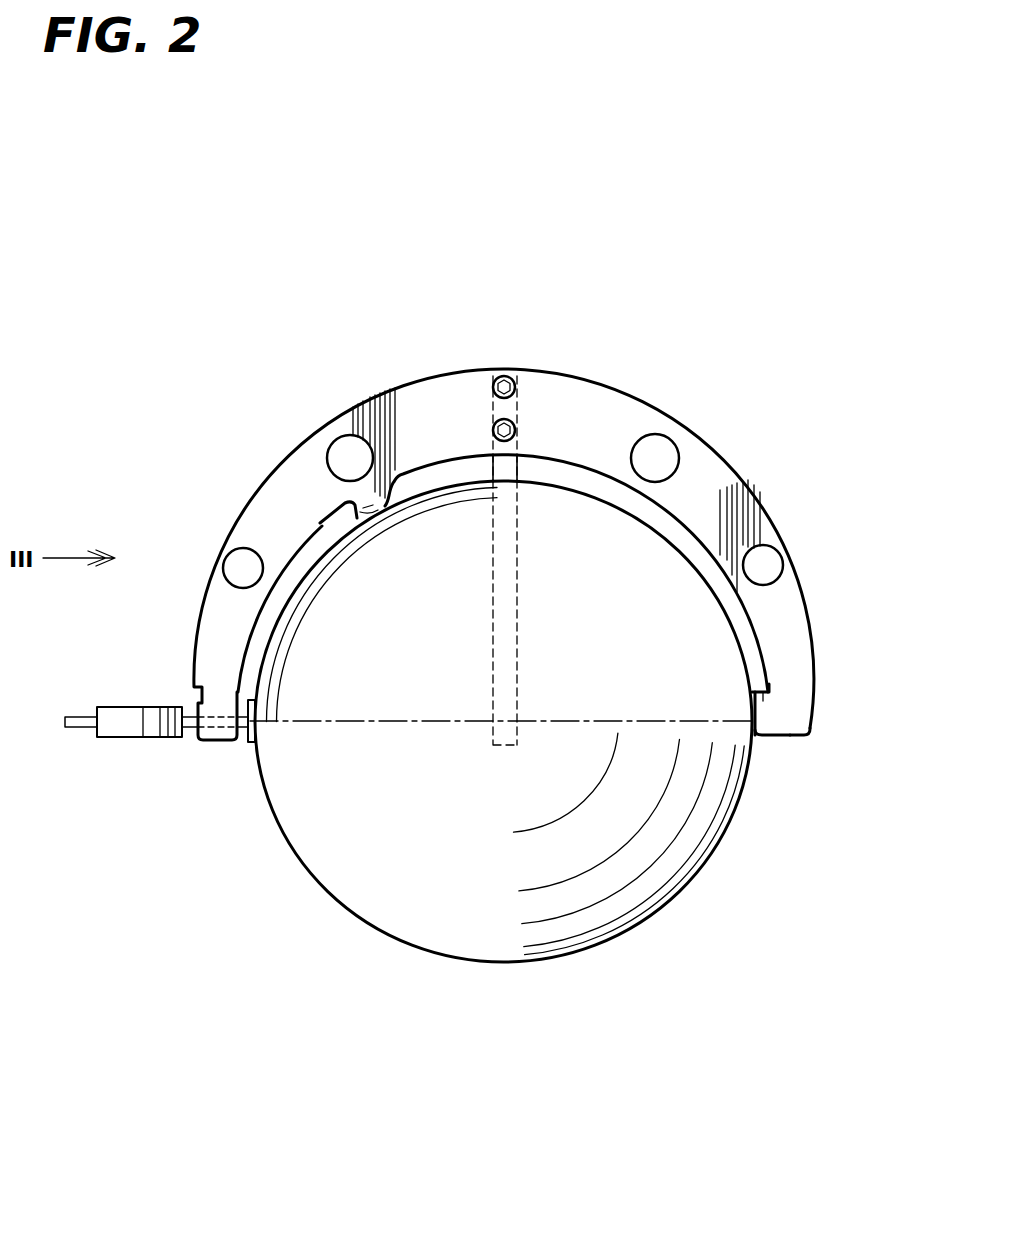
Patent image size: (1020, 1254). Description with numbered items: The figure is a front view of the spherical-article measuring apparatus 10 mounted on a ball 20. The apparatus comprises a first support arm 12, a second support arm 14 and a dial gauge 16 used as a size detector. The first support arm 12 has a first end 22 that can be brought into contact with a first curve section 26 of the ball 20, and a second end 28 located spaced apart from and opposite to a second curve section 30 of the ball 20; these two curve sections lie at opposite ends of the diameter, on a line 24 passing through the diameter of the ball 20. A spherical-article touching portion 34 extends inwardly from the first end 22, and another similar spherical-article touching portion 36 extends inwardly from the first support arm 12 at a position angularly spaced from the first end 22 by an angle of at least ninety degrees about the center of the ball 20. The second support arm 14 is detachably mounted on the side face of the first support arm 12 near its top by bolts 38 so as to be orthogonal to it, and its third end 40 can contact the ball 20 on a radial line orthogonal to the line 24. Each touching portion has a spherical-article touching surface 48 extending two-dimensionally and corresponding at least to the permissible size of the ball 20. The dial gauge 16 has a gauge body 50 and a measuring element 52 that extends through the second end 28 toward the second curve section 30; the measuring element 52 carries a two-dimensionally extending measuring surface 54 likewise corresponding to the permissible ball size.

The spherical-article measuring apparatus 10 is at (644, 296).
The first support arm 12 is at (366, 392).
The second support arm 14 is at (517, 468).
The dial gauge 16 is at (123, 707).
The ball 20 is at (355, 925).
The first end 22 is at (800, 736).
The line 24 is at (403, 720).
The first curve section 26 is at (771, 740).
The second end 28 is at (200, 742).
The second curve section 30 is at (244, 744).
The spherical-article touching portion 34 is at (769, 690).
The spherical-article touching portion 36 is at (355, 522).
The bolts 38 is at (495, 383).
The third end 40 is at (517, 697).
The spherical-article touching surface 48 is at (363, 507).
The gauge body 50 is at (125, 738).
The measuring element 52 is at (250, 696).
The measuring surface 54 is at (258, 712).